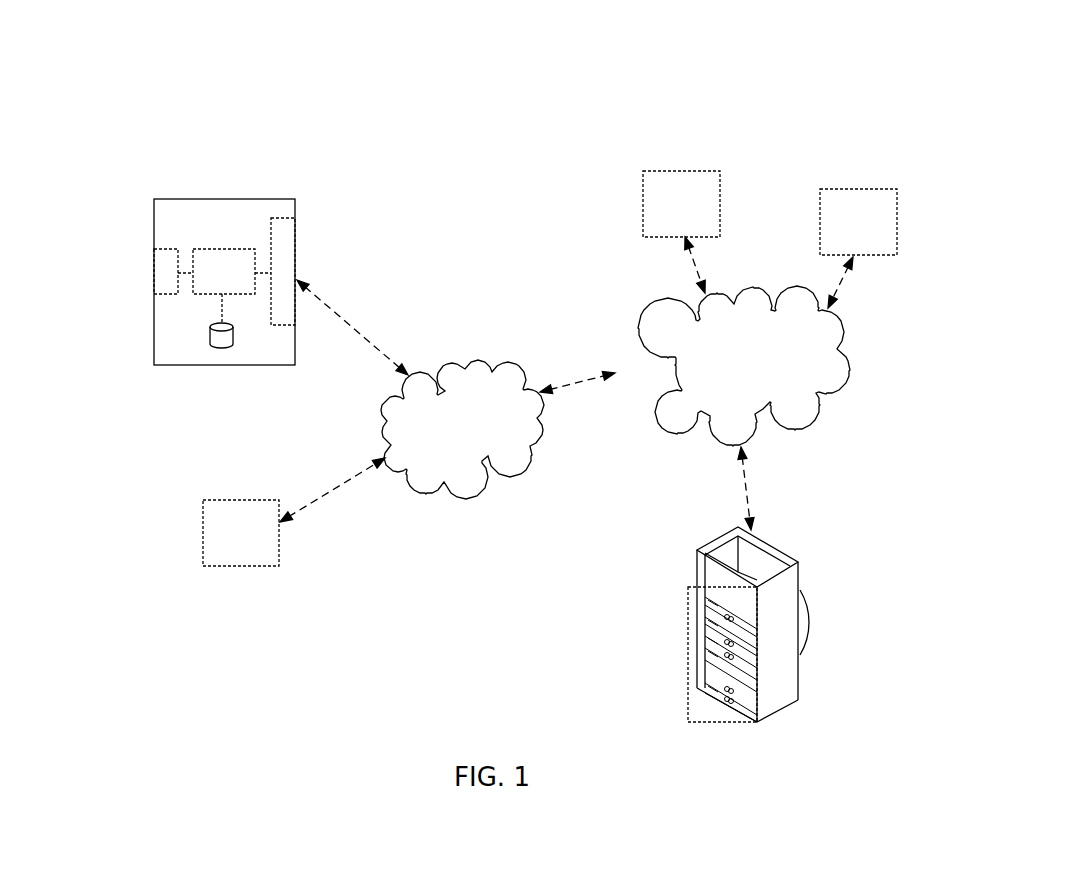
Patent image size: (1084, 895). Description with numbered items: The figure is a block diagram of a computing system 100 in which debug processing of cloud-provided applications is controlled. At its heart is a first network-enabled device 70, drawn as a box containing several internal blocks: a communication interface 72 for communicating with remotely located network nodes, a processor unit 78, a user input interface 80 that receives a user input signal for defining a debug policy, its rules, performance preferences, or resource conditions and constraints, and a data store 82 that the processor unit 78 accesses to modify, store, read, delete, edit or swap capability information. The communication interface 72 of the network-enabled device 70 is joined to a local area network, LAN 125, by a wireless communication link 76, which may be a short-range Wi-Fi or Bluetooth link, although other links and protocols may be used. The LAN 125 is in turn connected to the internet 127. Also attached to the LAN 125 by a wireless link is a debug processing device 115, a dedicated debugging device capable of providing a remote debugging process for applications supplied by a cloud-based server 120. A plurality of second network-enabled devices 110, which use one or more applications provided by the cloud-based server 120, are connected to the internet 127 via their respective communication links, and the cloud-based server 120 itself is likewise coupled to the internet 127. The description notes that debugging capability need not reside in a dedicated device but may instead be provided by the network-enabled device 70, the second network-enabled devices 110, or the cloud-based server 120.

The computing system 100 is at (551, 59).
The network-enabled device 70 is at (222, 199).
The communication interface 72 is at (295, 235).
The wireless communication link 76 is at (386, 354).
The processor unit 78 is at (193, 249).
The user input interface 80 is at (154, 276).
The data store 82 is at (233, 348).
The second network-enabled devices 110 is at (680, 171).
The debug processing device 115 is at (242, 566).
The cloud-based server 120 is at (687, 632).
The LAN 125 is at (500, 360).
The internet 127 is at (807, 417).